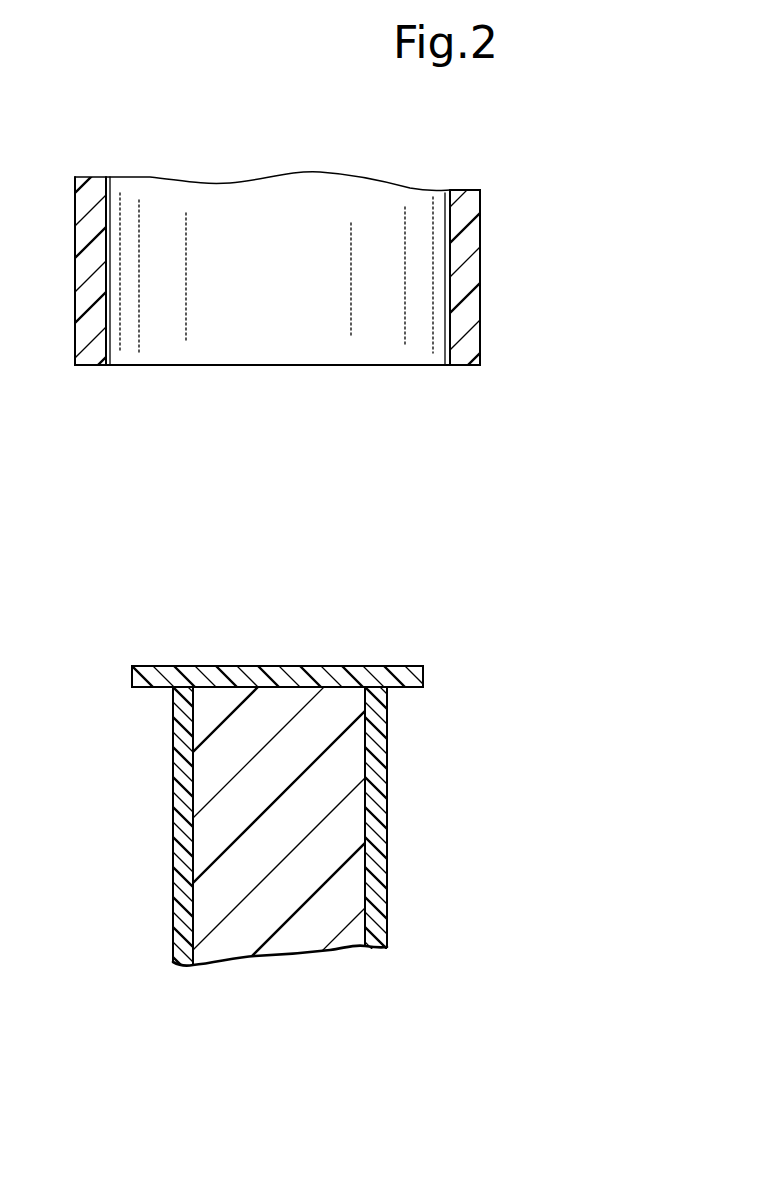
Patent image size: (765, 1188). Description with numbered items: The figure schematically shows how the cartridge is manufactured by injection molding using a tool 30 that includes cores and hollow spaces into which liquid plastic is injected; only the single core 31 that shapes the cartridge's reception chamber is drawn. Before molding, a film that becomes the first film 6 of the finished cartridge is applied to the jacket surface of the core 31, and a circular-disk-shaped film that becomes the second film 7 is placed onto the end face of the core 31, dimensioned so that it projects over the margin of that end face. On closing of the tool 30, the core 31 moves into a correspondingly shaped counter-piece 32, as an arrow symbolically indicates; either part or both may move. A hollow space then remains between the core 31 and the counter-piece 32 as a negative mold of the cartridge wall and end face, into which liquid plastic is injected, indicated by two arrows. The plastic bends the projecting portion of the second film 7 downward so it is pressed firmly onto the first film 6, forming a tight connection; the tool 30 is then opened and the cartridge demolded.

The tool 30 is at (585, 449).
The counter-piece 32 is at (480, 247).
The first film 6 is at (387, 800).
The second film 7 is at (316, 666).
The core 31 is at (278, 903).